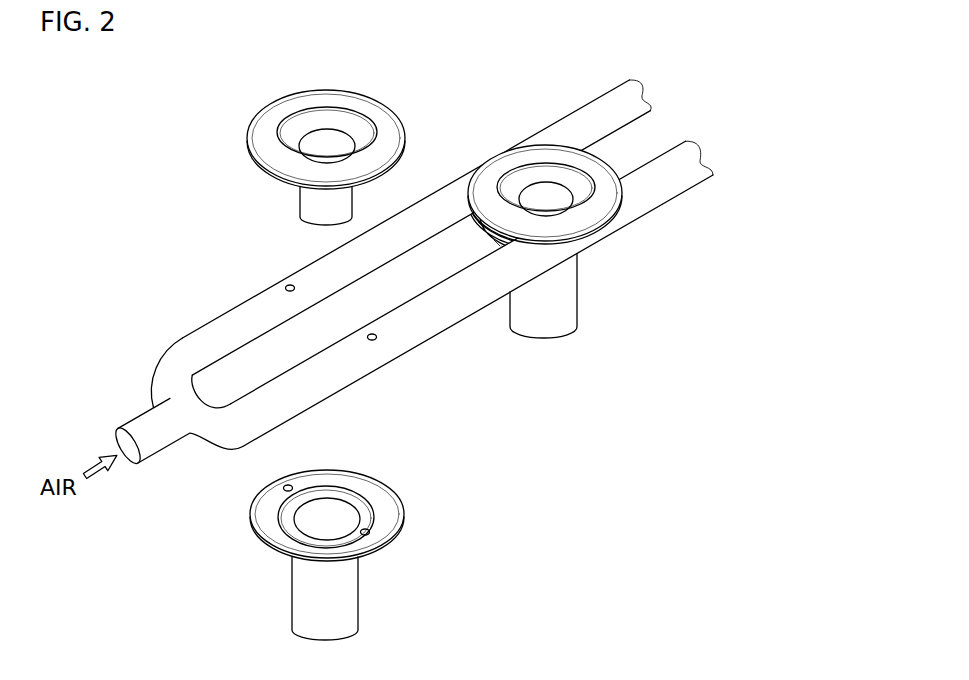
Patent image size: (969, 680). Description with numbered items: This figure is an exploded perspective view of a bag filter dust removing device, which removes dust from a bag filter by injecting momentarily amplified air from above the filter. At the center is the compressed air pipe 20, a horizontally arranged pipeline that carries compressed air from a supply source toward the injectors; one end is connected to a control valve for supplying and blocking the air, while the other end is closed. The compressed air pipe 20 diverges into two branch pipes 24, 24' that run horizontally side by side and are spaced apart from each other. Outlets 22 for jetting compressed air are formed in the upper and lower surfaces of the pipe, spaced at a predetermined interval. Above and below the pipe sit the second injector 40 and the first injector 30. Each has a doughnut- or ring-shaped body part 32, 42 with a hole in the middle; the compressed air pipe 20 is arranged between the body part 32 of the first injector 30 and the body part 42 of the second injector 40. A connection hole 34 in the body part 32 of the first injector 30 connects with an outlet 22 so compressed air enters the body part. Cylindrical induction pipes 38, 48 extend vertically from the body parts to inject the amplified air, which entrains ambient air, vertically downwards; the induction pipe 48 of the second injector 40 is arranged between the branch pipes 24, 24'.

The compressed air pipe 20 is at (416, 265).
The outlets 22 is at (287, 285).
The branch pipe 24 is at (415, 205).
The branch pipe 24' is at (479, 292).
The first injector 30 is at (415, 418).
The body part 32 is at (482, 233).
The connection hole 34 is at (284, 488).
The induction pipe 38 is at (574, 315).
The second injector 40 is at (432, 140).
The body part 42 is at (598, 172).
The induction pipe 48 is at (306, 200).